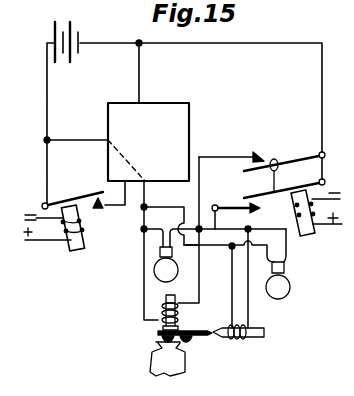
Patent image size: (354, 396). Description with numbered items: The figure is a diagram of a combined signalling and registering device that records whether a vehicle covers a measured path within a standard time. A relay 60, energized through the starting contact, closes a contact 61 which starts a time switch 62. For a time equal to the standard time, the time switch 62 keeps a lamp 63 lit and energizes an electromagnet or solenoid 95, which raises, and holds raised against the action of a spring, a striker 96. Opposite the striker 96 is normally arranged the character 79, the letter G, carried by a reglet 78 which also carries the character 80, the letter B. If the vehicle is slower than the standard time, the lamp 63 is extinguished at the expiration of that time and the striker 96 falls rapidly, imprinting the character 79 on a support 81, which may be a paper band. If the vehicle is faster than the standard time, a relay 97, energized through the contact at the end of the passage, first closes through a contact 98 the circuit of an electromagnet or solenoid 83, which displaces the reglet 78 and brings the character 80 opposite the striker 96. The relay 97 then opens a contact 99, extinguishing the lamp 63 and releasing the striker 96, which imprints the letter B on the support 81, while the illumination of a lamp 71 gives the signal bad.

The relay 60 is at (73, 240).
The contact 61 is at (100, 210).
The time switch 62 is at (148, 142).
The lamp 63 is at (154, 270).
The lamp 71 is at (288, 292).
The reglet 78 is at (207, 340).
The character 79 is at (157, 341).
The character 80 is at (186, 343).
The support 81 is at (148, 343).
The solenoid 83 is at (250, 338).
The solenoid 95 is at (162, 306).
The striker 96 is at (177, 327).
The relay 97 is at (305, 236).
The contact 98 is at (258, 197).
The contact 99 is at (282, 150).